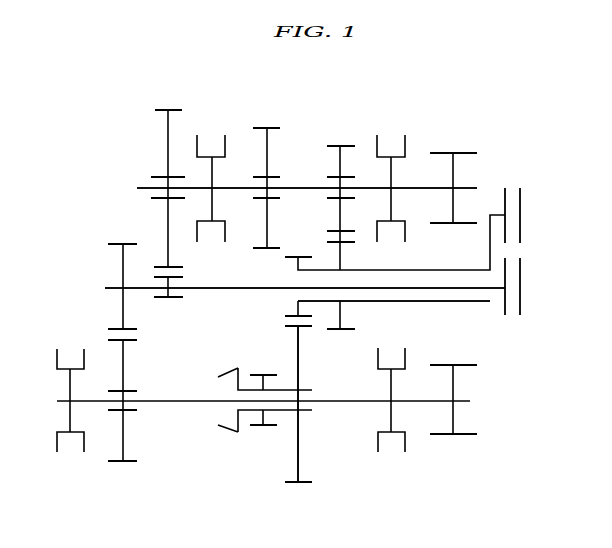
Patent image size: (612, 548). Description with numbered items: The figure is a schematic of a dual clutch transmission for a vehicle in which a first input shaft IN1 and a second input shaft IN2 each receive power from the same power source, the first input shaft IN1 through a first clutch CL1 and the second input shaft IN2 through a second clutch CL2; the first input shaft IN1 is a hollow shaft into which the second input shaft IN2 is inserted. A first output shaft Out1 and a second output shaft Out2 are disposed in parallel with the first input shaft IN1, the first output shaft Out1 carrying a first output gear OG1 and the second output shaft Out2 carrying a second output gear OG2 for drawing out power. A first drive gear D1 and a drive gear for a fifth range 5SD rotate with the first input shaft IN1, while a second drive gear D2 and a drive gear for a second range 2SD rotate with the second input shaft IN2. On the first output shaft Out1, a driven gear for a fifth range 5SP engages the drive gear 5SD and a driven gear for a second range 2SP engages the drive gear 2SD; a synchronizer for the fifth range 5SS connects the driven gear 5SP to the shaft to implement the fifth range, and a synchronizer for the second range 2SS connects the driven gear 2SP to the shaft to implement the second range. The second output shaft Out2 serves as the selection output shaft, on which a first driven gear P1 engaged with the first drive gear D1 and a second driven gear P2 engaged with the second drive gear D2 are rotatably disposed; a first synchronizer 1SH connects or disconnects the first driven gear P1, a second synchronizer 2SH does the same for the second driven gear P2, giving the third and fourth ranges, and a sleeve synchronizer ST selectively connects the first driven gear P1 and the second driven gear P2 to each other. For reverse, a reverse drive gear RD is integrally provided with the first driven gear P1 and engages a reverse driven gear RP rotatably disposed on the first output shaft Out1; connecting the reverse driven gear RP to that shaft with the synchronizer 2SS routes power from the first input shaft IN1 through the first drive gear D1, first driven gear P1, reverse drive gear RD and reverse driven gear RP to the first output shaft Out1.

The driven gear for a second range 2SP is at (168, 110).
The synchronizer for the second range 2SS is at (212, 135).
The reverse driven gear RP is at (267, 128).
The driven gear for a fifth range 5SP is at (340, 146).
The synchronizer for the fifth range 5SS is at (391, 135).
The first output gear OG1 is at (468, 153).
The first output shaft Out1 is at (465, 188).
The first clutch CL1 is at (521, 215).
The second clutch CL2 is at (521, 287).
The first input shaft IN1 is at (472, 302).
The second input shaft IN2 is at (438, 288).
The second drive gear D2 is at (118, 244).
The drive gear for a second range 2SD is at (156, 277).
The first drive gear D1 is at (286, 317).
The drive gear for a fifth range 5SD is at (340, 329).
The second synchronizer 2SH is at (70, 452).
The second driven gear P2 is at (125, 461).
The sleeve synchronizer ST is at (226, 435).
The reverse drive gear RD is at (258, 428).
The first driven gear P1 is at (290, 485).
The first synchronizer 1SH is at (391, 452).
The second output gear OG2 is at (466, 434).
The second output shaft Out2 is at (470, 401).